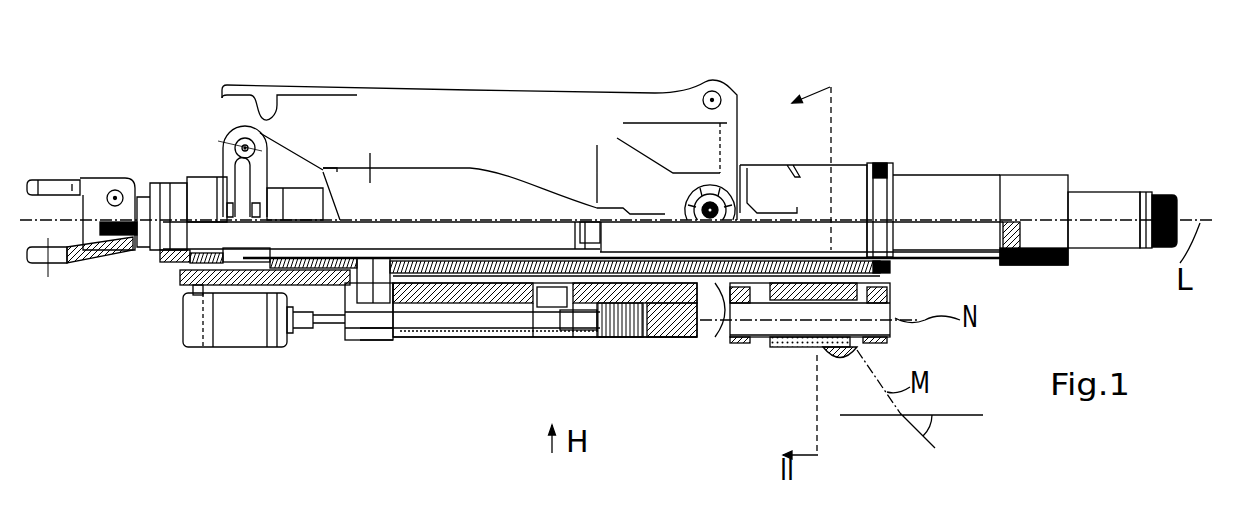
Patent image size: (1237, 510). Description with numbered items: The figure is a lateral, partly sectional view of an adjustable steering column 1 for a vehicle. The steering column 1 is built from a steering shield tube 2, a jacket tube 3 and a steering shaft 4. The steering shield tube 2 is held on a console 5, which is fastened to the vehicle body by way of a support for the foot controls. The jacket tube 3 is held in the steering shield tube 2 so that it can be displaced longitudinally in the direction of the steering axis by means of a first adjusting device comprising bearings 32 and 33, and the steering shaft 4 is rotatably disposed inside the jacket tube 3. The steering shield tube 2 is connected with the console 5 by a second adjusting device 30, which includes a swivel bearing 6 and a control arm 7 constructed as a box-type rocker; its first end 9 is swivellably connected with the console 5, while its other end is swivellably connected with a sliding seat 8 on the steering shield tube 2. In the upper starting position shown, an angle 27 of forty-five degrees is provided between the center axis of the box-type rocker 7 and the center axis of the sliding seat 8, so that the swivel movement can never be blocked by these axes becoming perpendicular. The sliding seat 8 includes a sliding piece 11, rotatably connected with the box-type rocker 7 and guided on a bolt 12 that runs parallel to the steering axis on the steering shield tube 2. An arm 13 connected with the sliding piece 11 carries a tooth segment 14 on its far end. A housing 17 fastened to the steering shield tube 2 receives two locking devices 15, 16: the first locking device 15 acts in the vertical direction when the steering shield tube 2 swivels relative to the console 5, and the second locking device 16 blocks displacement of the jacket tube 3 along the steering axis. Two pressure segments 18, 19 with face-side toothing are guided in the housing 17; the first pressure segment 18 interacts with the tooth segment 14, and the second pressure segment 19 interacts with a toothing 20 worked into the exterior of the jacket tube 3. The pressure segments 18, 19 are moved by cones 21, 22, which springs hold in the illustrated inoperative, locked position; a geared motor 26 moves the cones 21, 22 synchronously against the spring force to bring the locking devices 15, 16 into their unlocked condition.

The adjustable steering column 1 is at (1013, 85).
The steering shield tube 2 is at (847, 172).
The jacket tube 3 is at (987, 180).
The steering shaft 4 is at (120, 250).
The console 5 is at (443, 104).
The swivel bearing 6 is at (233, 132).
The control arm (box-type rocker) 7 is at (835, 355).
The sliding seat 8 is at (793, 350).
The first end of box-type rocker 9 is at (753, 167).
The sliding piece 11 is at (773, 347).
The bolt 12 is at (890, 330).
The arm 13 is at (720, 287).
The tooth segment 14 is at (547, 303).
The first locking device 15 is at (552, 355).
The second locking device 16 is at (367, 357).
The housing 17 is at (463, 340).
The first pressure segment 18 is at (540, 335).
The second pressure segment 19 is at (350, 340).
The toothing 20 is at (375, 262).
The first cone 21 is at (567, 323).
The second cone 22 is at (385, 340).
The geared motor 26 is at (185, 333).
The angle 27 is at (943, 428).
The second adjusting device 30 is at (819, 149).
The bearing 32 is at (298, 283).
The bearing 33 is at (897, 268).